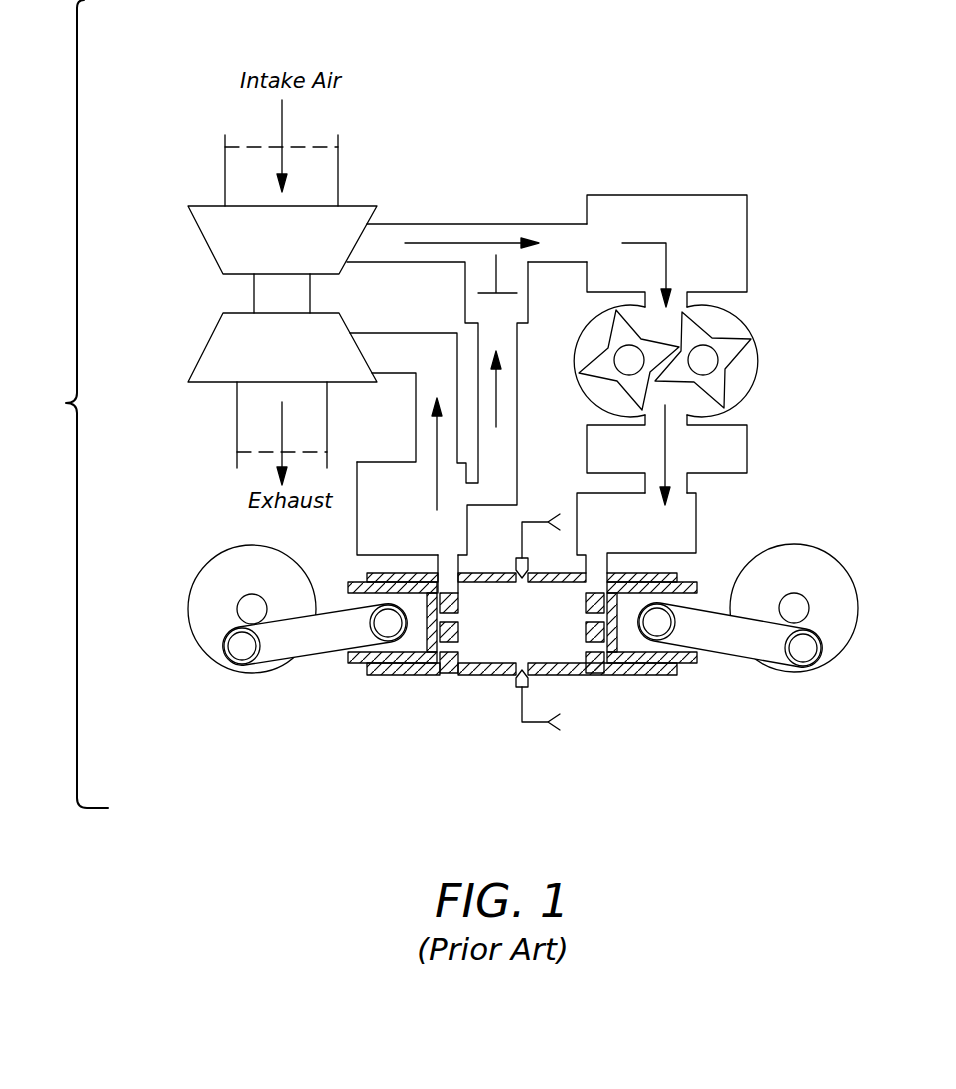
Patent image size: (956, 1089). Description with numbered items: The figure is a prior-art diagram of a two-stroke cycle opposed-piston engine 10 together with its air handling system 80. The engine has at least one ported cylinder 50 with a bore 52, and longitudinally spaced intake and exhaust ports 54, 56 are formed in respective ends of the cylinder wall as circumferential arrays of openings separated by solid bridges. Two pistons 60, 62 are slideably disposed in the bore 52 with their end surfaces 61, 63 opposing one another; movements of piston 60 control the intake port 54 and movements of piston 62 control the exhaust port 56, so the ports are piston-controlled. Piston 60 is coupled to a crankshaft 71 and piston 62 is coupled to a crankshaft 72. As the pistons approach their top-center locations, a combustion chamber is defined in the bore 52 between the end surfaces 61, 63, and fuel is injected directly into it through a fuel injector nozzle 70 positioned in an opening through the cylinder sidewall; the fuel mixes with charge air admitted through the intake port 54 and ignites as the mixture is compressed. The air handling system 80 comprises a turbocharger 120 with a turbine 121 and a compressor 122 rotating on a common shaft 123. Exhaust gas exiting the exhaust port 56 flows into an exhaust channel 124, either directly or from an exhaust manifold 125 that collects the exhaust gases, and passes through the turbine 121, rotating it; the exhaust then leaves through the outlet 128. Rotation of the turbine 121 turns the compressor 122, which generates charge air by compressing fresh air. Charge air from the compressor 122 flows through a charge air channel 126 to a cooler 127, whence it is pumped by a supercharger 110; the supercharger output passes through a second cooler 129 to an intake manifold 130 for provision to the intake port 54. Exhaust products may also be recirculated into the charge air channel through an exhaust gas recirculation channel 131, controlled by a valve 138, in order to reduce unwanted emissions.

The opposed-piston engine 10 is at (66, 403).
The air handling system 80 is at (547, 60).
The turbocharger 120 is at (186, 298).
The turbine 121 is at (203, 354).
The compressor 122 is at (200, 242).
The common shaft 123 is at (312, 293).
The exhaust channel 124 is at (417, 385).
The exhaust manifold 125 is at (357, 525).
The charge air channel 126 is at (453, 224).
The cooler 127 is at (747, 253).
The exhaust outlet 128 is at (237, 437).
The cooler 129 is at (747, 446).
The intake manifold 130 is at (696, 530).
The exhaust gas recirculation (EGR) channel 131 is at (517, 398).
The EGR valve 138 is at (498, 270).
The supercharger 110 is at (738, 318).
The ported cylinder 50 is at (543, 640).
The bore 52 is at (538, 636).
The intake port 54 is at (600, 668).
The exhaust port 56 is at (450, 675).
The piston 60 is at (688, 582).
The end surface 61 is at (587, 602).
The piston 62 is at (353, 665).
The end surface 63 is at (438, 605).
The fuel injector nozzle 70 is at (518, 565).
The crankshaft 71 is at (827, 553).
The crankshaft 72 is at (198, 578).